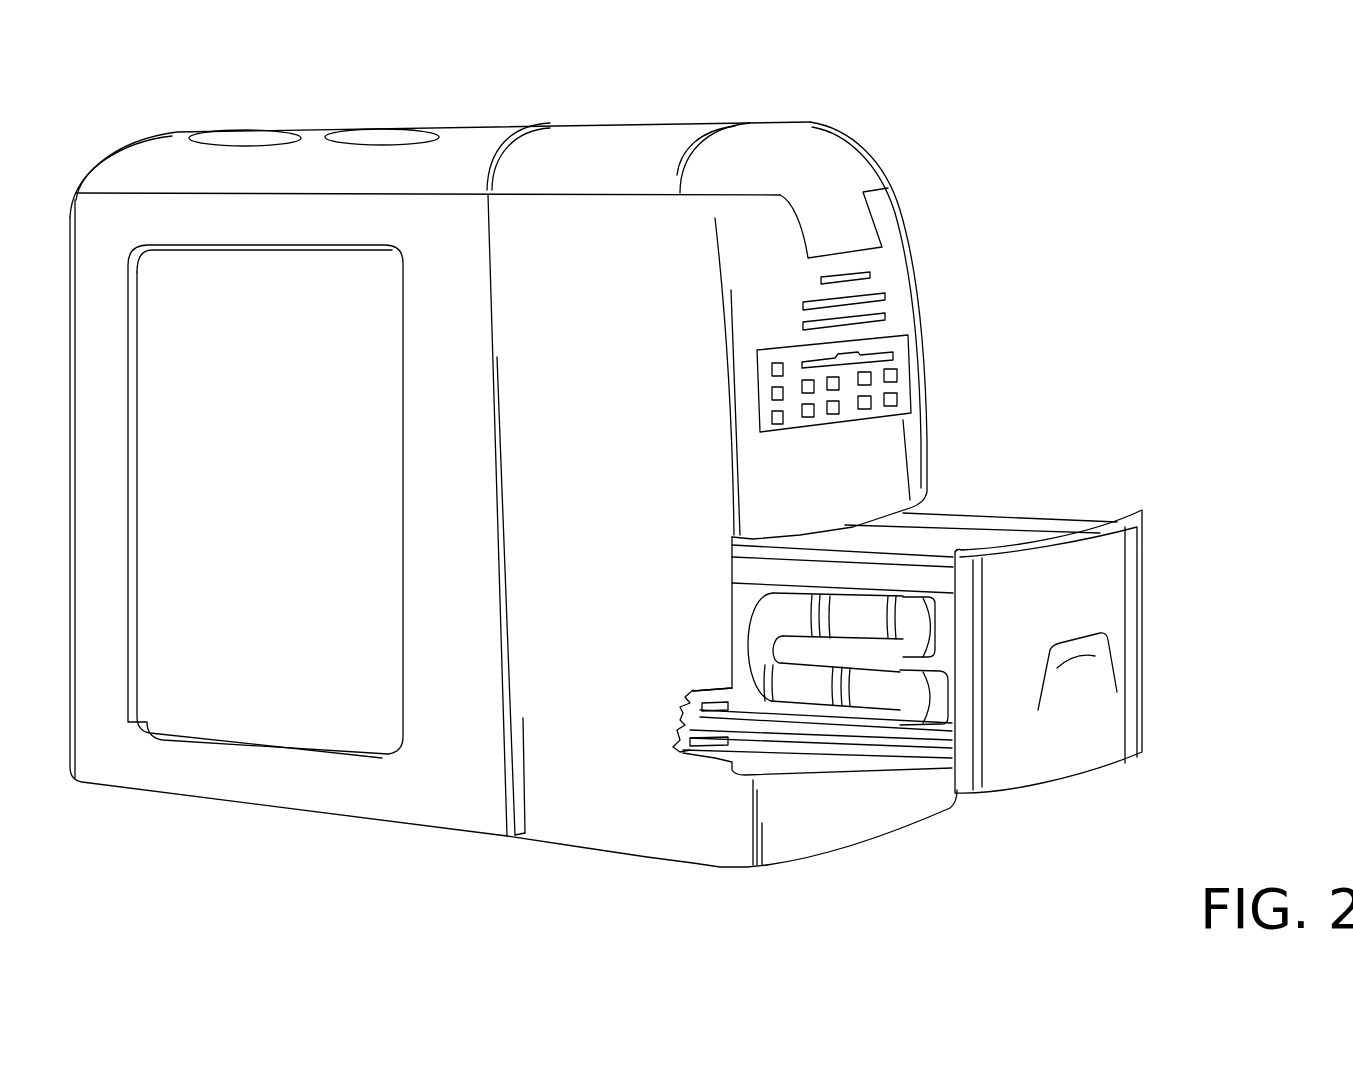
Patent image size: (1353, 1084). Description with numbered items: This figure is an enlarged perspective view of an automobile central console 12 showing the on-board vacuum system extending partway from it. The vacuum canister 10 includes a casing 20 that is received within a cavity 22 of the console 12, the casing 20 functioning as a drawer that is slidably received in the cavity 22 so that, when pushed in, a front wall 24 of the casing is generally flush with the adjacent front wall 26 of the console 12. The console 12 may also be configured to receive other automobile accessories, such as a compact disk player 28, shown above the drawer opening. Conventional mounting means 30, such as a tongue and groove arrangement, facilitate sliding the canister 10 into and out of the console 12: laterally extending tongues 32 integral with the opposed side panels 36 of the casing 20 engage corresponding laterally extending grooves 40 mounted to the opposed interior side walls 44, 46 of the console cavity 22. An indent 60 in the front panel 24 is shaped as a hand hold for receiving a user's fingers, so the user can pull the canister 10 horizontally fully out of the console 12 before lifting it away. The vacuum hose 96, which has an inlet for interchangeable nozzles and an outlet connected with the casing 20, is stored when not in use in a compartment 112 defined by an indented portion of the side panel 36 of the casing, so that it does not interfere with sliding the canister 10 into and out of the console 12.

The canister 10 is at (1040, 499).
The console 12 is at (622, 140).
The casing 20 is at (878, 760).
The cavity 22 is at (763, 767).
The front wall 24 is at (1132, 713).
The front wall 26 is at (917, 803).
The compact disk player 28 is at (900, 362).
The mounting means 30 is at (677, 710).
The tongue 32 is at (853, 738).
The side panel 36 is at (747, 570).
The grooves 40 is at (693, 712).
The interior side wall 44 is at (607, 760).
The interior side wall 46 is at (928, 506).
The indent 60 is at (1082, 650).
The hose 96 is at (757, 643).
The compartment 112 is at (748, 600).